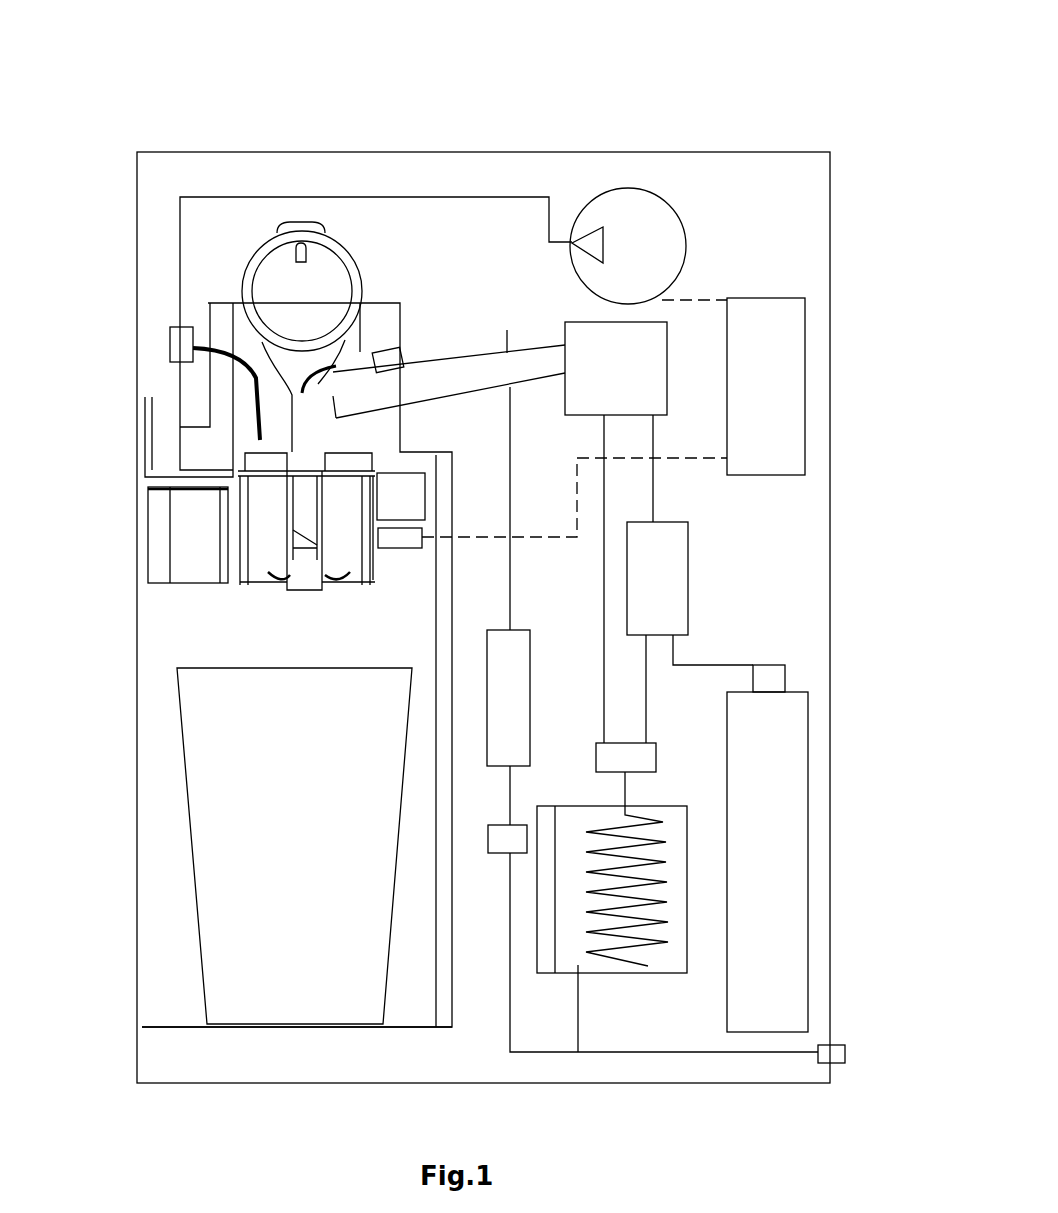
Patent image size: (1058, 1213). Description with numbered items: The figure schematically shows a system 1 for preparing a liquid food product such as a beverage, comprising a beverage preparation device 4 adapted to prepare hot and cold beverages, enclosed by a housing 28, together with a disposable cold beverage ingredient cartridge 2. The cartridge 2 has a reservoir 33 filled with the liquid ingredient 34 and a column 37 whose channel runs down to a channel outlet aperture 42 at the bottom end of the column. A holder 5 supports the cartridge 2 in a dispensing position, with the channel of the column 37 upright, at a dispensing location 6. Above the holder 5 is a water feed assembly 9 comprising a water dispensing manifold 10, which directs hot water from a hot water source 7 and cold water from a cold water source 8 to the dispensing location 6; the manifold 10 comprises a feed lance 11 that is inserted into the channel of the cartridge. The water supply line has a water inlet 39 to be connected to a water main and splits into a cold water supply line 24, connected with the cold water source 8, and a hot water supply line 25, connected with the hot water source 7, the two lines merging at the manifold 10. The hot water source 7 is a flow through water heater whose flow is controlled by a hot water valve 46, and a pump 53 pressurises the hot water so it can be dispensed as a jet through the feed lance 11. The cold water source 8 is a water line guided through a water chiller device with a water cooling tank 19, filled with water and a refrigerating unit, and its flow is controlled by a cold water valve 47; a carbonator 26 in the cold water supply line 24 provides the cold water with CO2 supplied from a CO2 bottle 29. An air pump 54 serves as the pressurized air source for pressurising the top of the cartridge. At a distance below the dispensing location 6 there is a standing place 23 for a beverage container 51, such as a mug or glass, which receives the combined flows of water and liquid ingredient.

The system 1 is at (797, 97).
The cold beverage ingredient cartridge 2 is at (268, 590).
The beverage preparation device 4 is at (562, 158).
The holder 5 is at (135, 508).
The dispensing location 6 is at (272, 605).
The hot water source 7 is at (512, 642).
The cold water source 8 is at (680, 890).
The water feed assembly 9 is at (402, 284).
The water dispensing manifold 10 is at (362, 436).
The feed lance 11 is at (290, 440).
The water cooling tank 19 is at (650, 968).
The standing place 23 is at (185, 1022).
The cold water supply line 24 is at (480, 372).
The hot water supply line 25 is at (512, 450).
The carbonator 26 is at (690, 600).
The housing 28 is at (137, 366).
The CO2 bottle 29 is at (800, 720).
The reservoir 33 is at (270, 558).
The liquid ingredient 34 is at (270, 530).
The column 37 is at (345, 532).
The water inlet 39 is at (832, 1045).
The channel outlet aperture 42 is at (318, 602).
The hot water valve 46 is at (515, 835).
The cold water valve 47 is at (652, 762).
The beverage container 51 is at (208, 875).
The pump 53 is at (383, 348).
The air pump 54 is at (215, 350).